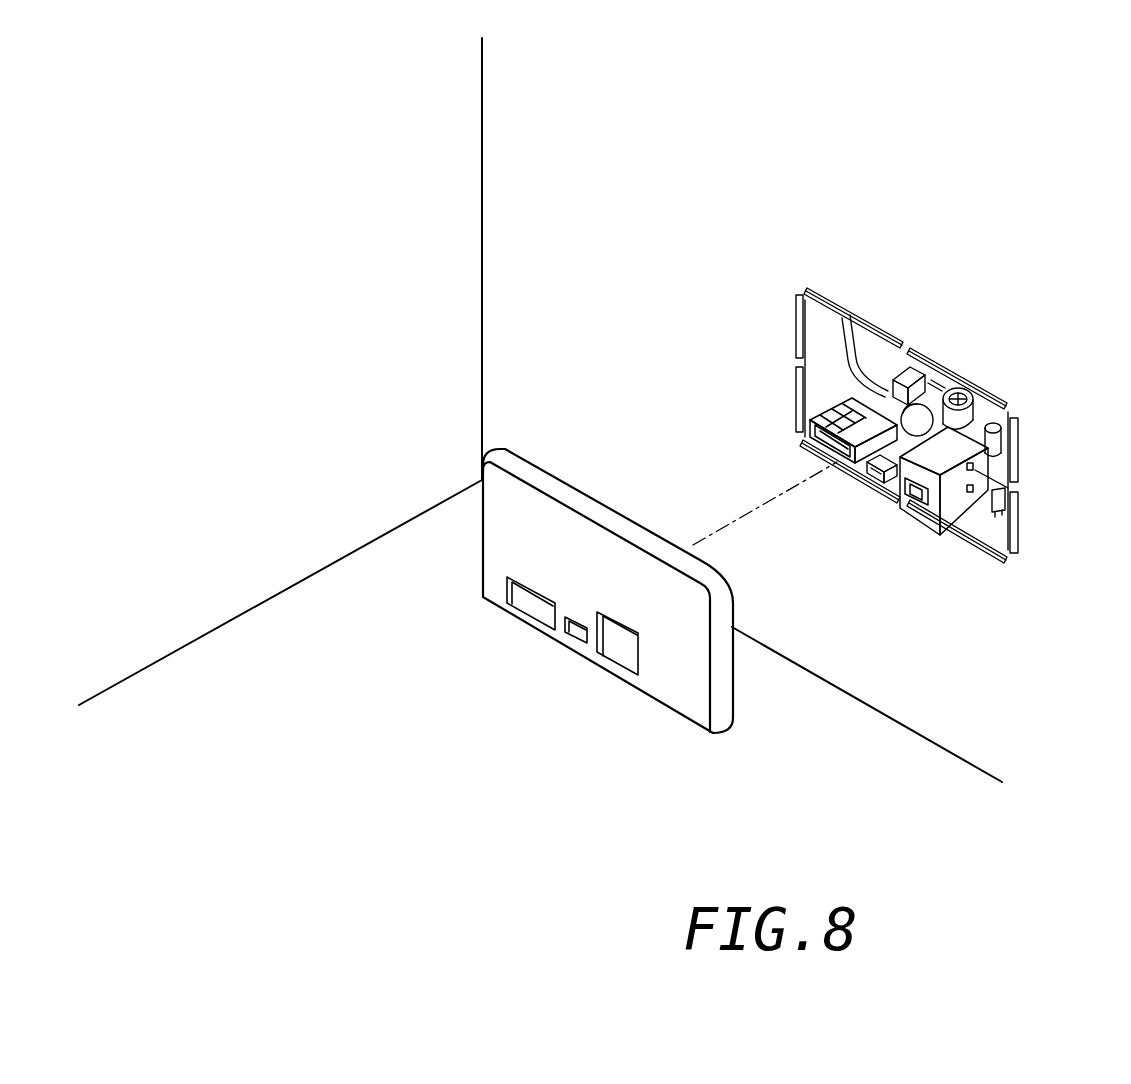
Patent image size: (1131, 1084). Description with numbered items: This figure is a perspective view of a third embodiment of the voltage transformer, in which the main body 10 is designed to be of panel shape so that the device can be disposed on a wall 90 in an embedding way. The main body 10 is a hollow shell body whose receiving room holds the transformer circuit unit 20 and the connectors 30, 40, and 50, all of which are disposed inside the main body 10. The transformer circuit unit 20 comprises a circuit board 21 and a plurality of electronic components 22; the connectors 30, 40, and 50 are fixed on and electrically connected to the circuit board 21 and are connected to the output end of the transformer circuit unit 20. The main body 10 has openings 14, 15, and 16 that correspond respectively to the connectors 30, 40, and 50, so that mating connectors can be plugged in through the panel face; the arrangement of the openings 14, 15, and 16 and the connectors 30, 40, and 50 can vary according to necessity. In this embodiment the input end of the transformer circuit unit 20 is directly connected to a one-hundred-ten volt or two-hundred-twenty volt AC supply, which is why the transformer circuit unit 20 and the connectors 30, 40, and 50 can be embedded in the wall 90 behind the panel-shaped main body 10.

The main body 10 is at (533, 656).
The opening 14 is at (530, 603).
The opening 15 is at (627, 648).
The opening 16 is at (582, 643).
The transformer circuit unit 20 is at (890, 368).
The circuit board 21 is at (997, 470).
The electronic components 22 is at (992, 430).
The connector 30 is at (840, 453).
The connector 40 is at (940, 512).
The connector 50 is at (872, 487).
The wall 90 is at (928, 695).